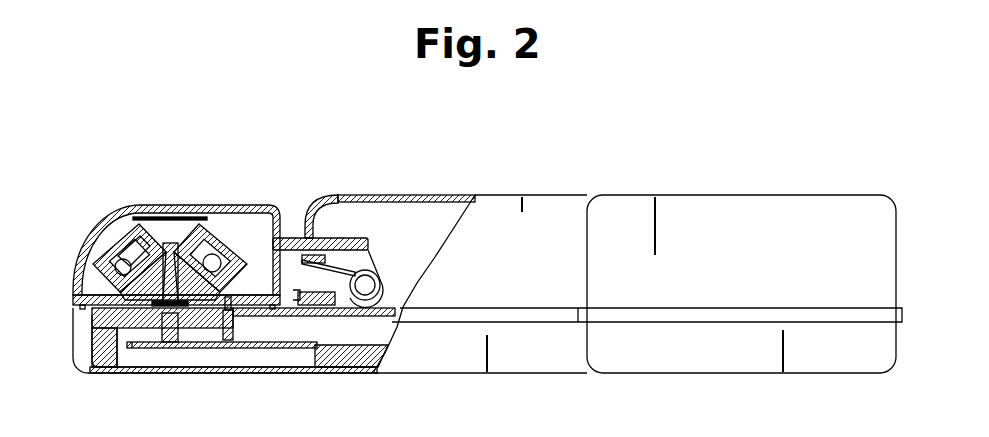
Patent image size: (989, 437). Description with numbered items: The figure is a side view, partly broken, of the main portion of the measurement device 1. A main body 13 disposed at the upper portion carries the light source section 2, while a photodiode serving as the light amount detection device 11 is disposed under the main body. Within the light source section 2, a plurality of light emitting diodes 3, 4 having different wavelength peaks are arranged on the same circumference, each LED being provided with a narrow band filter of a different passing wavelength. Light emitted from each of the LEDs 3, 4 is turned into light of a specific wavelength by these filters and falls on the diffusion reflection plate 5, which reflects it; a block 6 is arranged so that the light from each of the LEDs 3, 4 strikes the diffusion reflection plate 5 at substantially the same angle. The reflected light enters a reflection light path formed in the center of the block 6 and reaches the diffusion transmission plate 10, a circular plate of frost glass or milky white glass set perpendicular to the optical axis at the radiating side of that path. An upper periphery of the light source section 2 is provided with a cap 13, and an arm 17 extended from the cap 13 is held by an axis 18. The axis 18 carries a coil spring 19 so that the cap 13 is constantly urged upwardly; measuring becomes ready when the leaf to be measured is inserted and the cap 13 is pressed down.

The measurement device 1 is at (519, 159).
The light source section 2 is at (225, 227).
The light emitting diode 3 is at (127, 266).
The light emitting diode 4 is at (216, 267).
The diffusion reflection plate 5 is at (183, 220).
The block 6 is at (150, 273).
The diffusion transmission plate 10 is at (160, 307).
The light amount detection device 11 is at (170, 323).
The cap 13 is at (140, 199).
The arm 17 is at (310, 247).
The axis 18 is at (365, 285).
The coil spring 19 is at (330, 263).